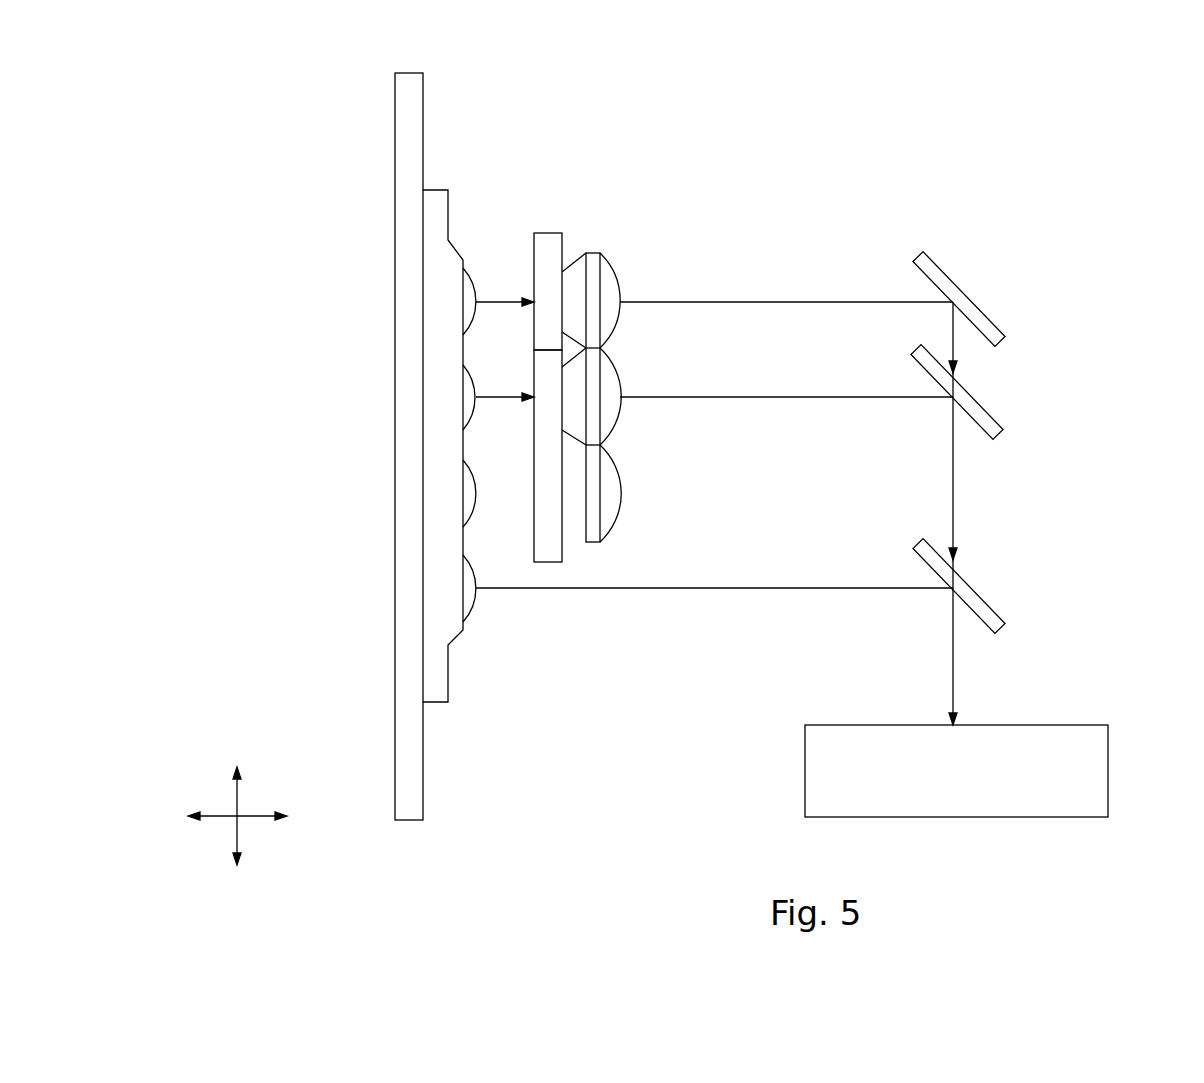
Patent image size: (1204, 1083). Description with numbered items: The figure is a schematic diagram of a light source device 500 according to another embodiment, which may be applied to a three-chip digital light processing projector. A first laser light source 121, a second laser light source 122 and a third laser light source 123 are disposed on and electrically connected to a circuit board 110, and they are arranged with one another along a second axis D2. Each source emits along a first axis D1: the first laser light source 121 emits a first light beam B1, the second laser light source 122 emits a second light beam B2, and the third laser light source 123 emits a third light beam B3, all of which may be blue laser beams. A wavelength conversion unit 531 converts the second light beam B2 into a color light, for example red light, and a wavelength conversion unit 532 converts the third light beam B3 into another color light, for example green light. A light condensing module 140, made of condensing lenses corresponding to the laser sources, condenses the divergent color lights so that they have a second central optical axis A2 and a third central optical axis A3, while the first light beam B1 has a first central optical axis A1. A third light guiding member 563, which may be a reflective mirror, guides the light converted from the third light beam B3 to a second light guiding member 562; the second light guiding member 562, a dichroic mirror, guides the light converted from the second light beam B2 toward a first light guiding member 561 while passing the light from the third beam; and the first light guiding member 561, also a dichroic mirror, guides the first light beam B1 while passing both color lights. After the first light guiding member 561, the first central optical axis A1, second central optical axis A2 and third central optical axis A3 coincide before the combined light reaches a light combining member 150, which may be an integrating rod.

The light source device 500 is at (294, 40).
The circuit board 110 is at (408, 74).
The first laser light source 121 is at (475, 603).
The second laser light source 122 is at (474, 413).
The third laser light source 123 is at (474, 290).
The wavelength conversion unit 531 is at (550, 563).
The wavelength conversion unit 532 is at (545, 233).
The light condensing module 140 is at (615, 275).
The light combining member 150 is at (1108, 768).
The first light guiding member 561 is at (975, 593).
The second light guiding member 562 is at (973, 402).
The third light guiding member 563 is at (980, 310).
The first light beam B1 is at (498, 586).
The second light beam B2 is at (498, 395).
The third light beam B3 is at (498, 300).
The first central optical axis A1 is at (773, 586).
The second central optical axis A2 is at (773, 396).
The third central optical axis A3 is at (773, 300).
The first axis D1 is at (241, 817).
The second axis D2 is at (237, 818).